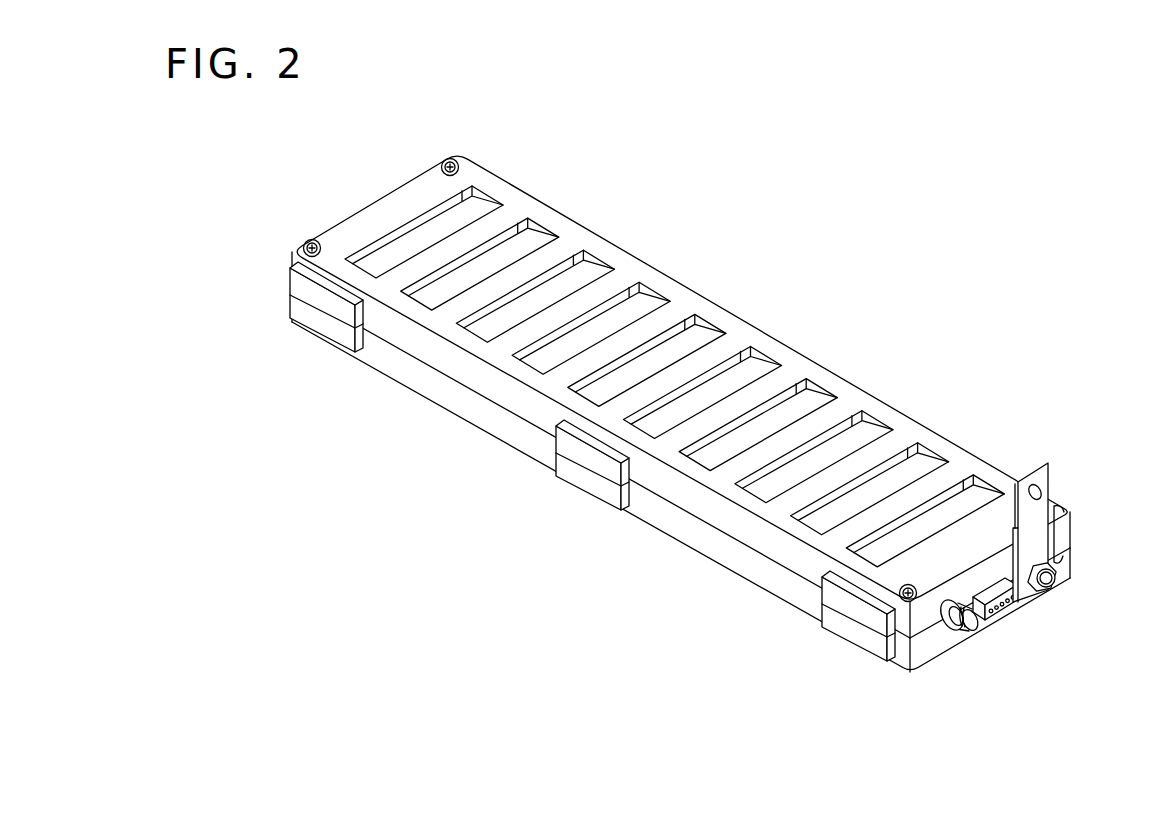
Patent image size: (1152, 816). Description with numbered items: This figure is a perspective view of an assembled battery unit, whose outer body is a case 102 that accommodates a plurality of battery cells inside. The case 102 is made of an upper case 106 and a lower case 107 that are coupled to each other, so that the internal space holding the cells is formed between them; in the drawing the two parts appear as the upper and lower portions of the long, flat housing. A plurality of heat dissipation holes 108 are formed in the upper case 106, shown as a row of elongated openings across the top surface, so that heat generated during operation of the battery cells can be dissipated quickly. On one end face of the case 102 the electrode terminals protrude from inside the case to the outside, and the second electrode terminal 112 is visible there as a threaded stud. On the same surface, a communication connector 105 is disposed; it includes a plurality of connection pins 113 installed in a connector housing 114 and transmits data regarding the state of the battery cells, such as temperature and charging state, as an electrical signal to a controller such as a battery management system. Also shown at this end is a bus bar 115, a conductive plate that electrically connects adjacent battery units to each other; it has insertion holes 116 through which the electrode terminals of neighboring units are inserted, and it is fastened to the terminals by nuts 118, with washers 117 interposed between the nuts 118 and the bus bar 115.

The case 102 is at (376, 421).
The communication connector 105 is at (999, 618).
The upper case 106 is at (470, 374).
The lower case 107 is at (470, 406).
The heat dissipation holes 108 is at (591, 271).
The second electrode terminal 112 is at (968, 628).
The connection pins 113 is at (1003, 608).
The connector housing 114 is at (1011, 602).
The bus bar 115 is at (1052, 468).
The insertion holes 116 is at (1041, 491).
The washers 117 is at (1063, 549).
The nuts 118 is at (1057, 569).